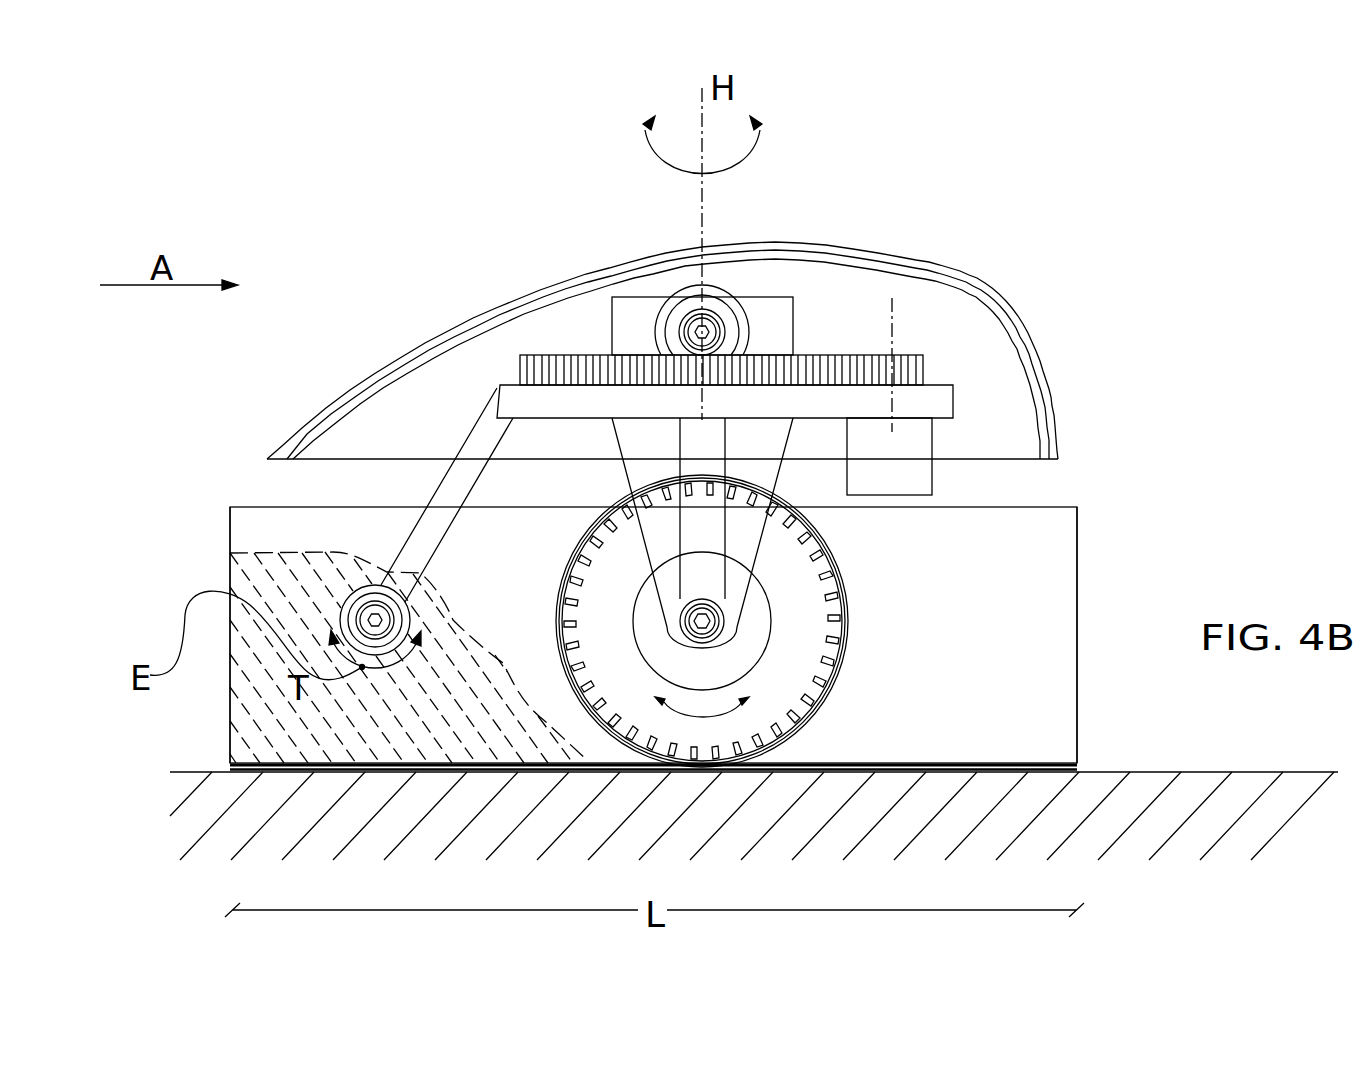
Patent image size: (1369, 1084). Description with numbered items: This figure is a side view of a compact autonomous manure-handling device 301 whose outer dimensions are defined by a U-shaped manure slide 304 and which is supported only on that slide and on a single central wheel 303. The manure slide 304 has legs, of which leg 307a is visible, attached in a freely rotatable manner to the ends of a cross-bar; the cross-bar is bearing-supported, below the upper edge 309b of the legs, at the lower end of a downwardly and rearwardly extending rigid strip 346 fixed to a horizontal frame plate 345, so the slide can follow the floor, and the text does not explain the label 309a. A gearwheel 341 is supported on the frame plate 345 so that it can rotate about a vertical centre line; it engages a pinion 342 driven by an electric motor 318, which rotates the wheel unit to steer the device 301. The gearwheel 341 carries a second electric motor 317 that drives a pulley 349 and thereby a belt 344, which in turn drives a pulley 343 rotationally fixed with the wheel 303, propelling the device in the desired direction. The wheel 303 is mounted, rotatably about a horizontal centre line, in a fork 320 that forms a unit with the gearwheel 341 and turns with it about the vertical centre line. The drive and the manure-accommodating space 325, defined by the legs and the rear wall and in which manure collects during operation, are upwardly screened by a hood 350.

The device 301 is at (423, 310).
The wheel 303 is at (617, 685).
The manure slide 304 is at (282, 537).
The leg 307a is at (966, 618).
The front edge 309a is at (1055, 762).
The upper edge 309b is at (243, 508).
The electric motor 317 is at (732, 309).
The electric motor 318 is at (913, 472).
The fork 320 is at (748, 435).
The manure-accommodating space 325 is at (563, 553).
The gearwheel 341 is at (570, 365).
The pinion 342 is at (902, 367).
The pulley 343 is at (722, 630).
The belt 344 is at (724, 530).
The frame plate 345 is at (532, 403).
The rigid strip 346 is at (455, 488).
The pulley 349 is at (705, 332).
The hood 350 is at (955, 278).